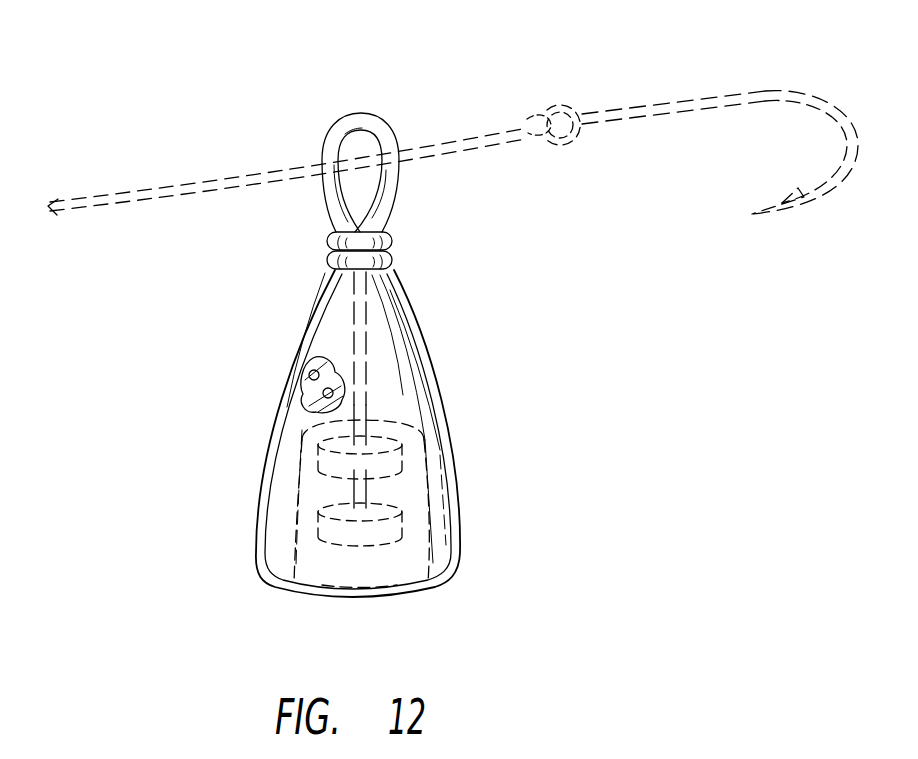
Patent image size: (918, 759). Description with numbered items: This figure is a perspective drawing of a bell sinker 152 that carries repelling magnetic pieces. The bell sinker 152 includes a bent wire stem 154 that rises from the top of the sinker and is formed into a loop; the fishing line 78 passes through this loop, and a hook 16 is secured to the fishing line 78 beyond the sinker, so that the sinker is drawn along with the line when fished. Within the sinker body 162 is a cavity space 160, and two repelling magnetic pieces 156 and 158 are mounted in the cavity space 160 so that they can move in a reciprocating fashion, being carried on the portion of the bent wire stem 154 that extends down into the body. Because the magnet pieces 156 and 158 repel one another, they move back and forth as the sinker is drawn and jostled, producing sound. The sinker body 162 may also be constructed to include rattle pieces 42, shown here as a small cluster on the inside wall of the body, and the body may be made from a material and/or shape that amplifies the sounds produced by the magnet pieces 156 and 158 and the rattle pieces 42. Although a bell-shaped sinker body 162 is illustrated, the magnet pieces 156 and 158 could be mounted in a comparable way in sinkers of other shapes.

The hook 16 is at (766, 89).
The fishing line 78 is at (187, 182).
The rattle pieces 42 is at (310, 375).
The bell sinker 152 is at (392, 457).
The bent wire stem 154 is at (394, 190).
The repelling magnetic piece 156 is at (400, 459).
The repelling magnetic piece 158 is at (404, 526).
The cavity space 160 is at (297, 550).
The sinker body 162 is at (268, 455).